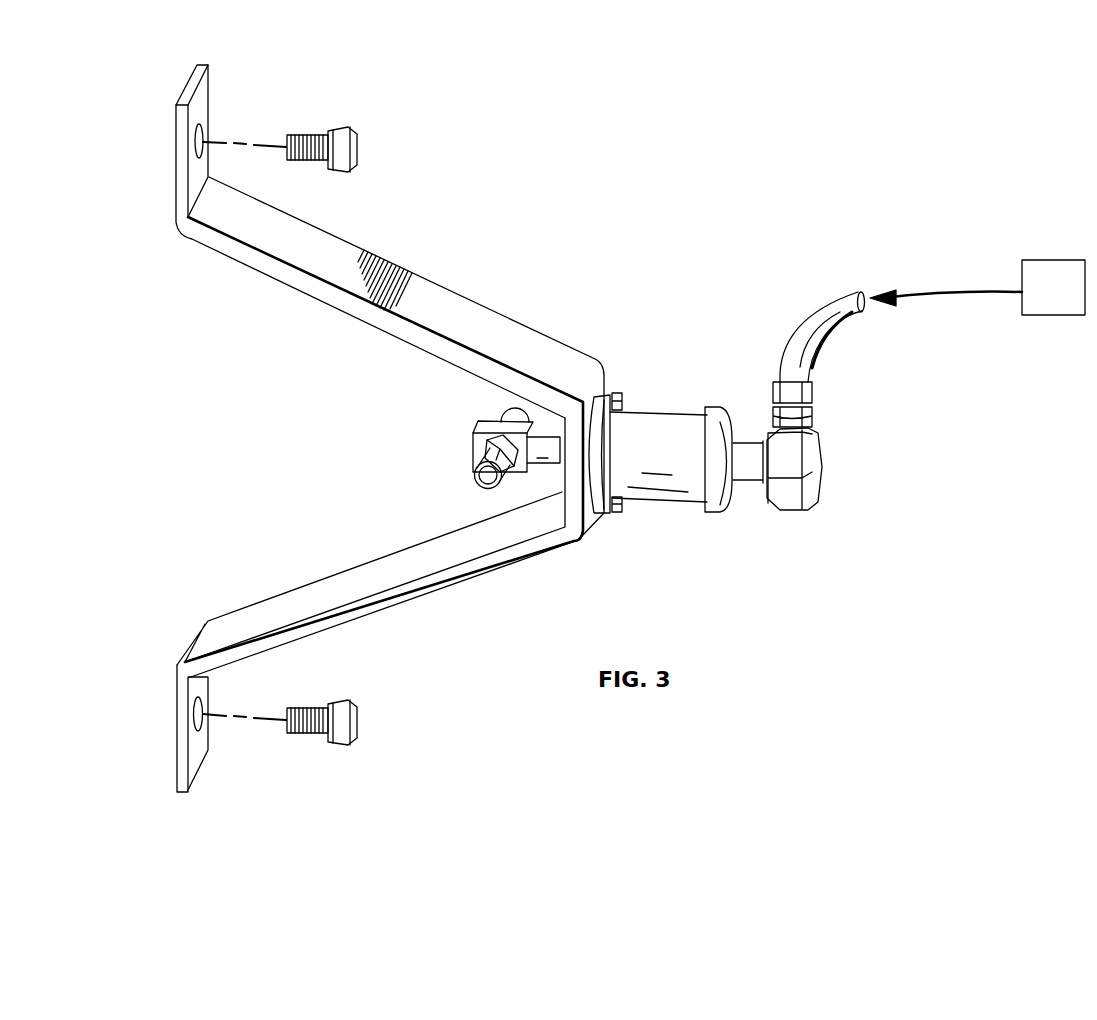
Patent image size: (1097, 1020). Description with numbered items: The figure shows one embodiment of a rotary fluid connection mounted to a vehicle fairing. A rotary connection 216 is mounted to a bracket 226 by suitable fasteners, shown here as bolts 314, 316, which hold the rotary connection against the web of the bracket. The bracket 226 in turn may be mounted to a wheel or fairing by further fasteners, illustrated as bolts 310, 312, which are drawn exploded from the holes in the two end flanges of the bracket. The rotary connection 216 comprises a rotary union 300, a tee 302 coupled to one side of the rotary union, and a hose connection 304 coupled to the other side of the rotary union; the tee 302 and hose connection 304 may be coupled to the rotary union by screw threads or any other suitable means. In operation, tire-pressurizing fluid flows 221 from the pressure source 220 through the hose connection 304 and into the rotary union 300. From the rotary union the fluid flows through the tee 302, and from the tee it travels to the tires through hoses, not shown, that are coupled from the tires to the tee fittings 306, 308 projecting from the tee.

The rotary connection 216 is at (745, 535).
The pressure source 220 is at (1063, 258).
The flow of tire-pressurizing fluid 221 is at (975, 276).
The bracket 226 is at (407, 604).
The rotary union 300 is at (672, 422).
The tee 302 is at (473, 438).
The hose connection 304 is at (823, 469).
The tee fitting 306 is at (480, 487).
The tee fitting 308 is at (502, 418).
The bolt 310 is at (357, 152).
The bolt 312 is at (357, 725).
The bolt 314 is at (620, 500).
The bolt 316 is at (618, 407).